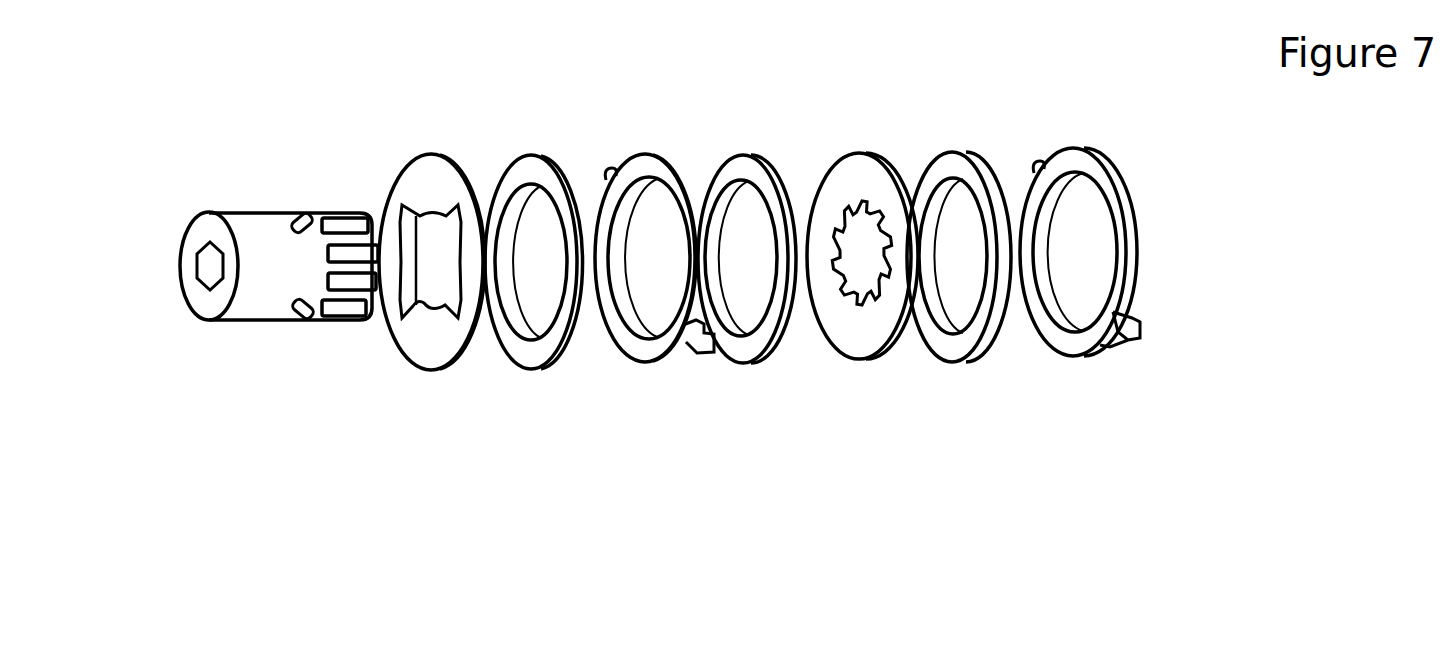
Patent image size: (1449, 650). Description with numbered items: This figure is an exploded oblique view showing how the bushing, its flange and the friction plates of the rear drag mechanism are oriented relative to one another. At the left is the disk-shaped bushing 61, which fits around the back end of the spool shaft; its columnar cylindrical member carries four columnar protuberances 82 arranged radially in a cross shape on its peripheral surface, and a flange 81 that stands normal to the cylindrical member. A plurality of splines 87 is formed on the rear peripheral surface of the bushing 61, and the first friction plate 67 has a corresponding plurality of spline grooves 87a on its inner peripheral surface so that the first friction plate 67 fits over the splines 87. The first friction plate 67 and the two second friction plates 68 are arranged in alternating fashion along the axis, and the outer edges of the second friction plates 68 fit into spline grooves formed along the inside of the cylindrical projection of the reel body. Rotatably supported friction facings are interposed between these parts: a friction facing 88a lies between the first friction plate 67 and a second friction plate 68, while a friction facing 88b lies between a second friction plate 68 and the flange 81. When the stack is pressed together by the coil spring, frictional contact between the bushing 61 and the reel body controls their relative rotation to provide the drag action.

The bushing 61 is at (222, 212).
The columnar protuberances 82 is at (303, 210).
The splines 87 is at (345, 222).
The flange 81 is at (428, 165).
The friction facing 88b is at (524, 165).
The second friction plates 68 is at (645, 160).
The friction facing 88a is at (738, 160).
The first friction plate 67 is at (858, 153).
The spline grooves 87a is at (835, 225).